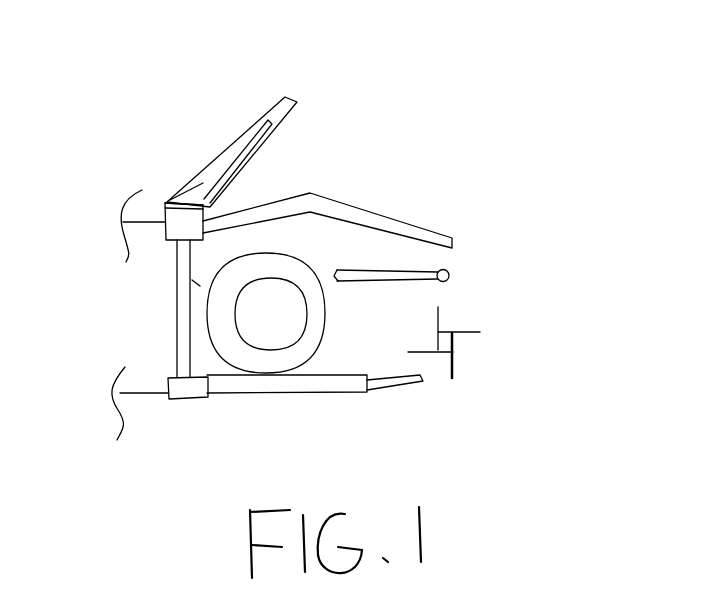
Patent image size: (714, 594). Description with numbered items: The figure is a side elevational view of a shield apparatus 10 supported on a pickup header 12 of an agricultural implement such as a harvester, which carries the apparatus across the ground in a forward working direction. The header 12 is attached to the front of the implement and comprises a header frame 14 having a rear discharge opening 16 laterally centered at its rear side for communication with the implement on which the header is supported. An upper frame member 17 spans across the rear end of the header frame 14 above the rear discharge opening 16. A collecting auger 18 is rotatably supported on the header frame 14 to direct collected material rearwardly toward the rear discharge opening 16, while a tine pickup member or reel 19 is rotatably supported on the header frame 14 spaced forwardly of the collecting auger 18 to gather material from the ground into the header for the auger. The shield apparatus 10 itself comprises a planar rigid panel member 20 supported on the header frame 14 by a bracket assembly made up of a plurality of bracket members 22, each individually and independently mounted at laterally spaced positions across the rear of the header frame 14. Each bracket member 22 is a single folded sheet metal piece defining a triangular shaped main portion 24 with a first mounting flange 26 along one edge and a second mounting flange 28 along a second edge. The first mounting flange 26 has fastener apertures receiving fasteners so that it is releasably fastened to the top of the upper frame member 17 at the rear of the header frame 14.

The shield apparatus 10 is at (418, 123).
The header 12 is at (557, 243).
The header frame 14 is at (394, 222).
The rear discharge opening 16 is at (196, 282).
The upper frame member 17 is at (180, 228).
The collecting auger 18 is at (270, 315).
The tine pickup member or reel 19 is at (453, 342).
The rigid panel member 20 is at (293, 112).
The bracket member 22 is at (180, 167).
The main portion 24 is at (203, 183).
The first mounting flange 26 is at (178, 205).
The second mounting flange 28 is at (238, 157).